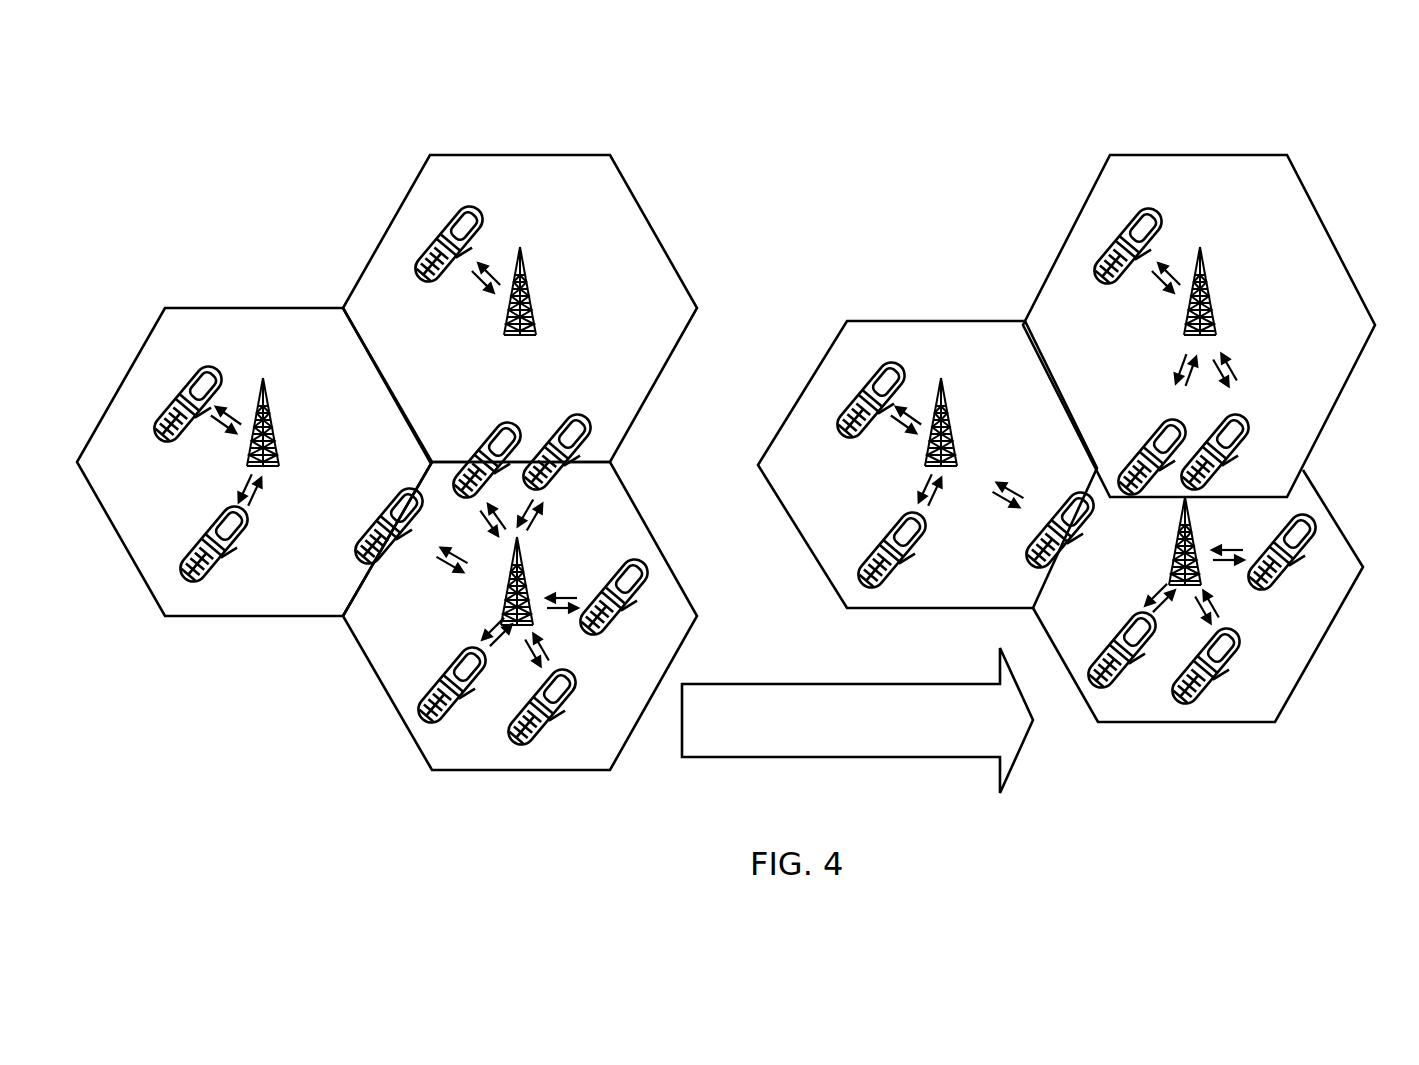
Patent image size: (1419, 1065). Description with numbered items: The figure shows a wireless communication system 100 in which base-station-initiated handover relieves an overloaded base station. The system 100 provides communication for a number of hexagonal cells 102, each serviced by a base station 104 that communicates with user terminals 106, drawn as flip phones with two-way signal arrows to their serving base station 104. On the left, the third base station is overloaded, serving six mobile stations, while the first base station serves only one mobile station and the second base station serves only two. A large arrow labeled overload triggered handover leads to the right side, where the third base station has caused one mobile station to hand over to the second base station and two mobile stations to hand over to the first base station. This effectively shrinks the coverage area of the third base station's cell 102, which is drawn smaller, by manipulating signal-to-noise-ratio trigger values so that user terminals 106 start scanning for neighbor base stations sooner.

The wireless communication system 100 is at (757, 159).
The cell 102 is at (651, 228).
The base station 104 is at (526, 288).
The user terminal 106 is at (479, 207).